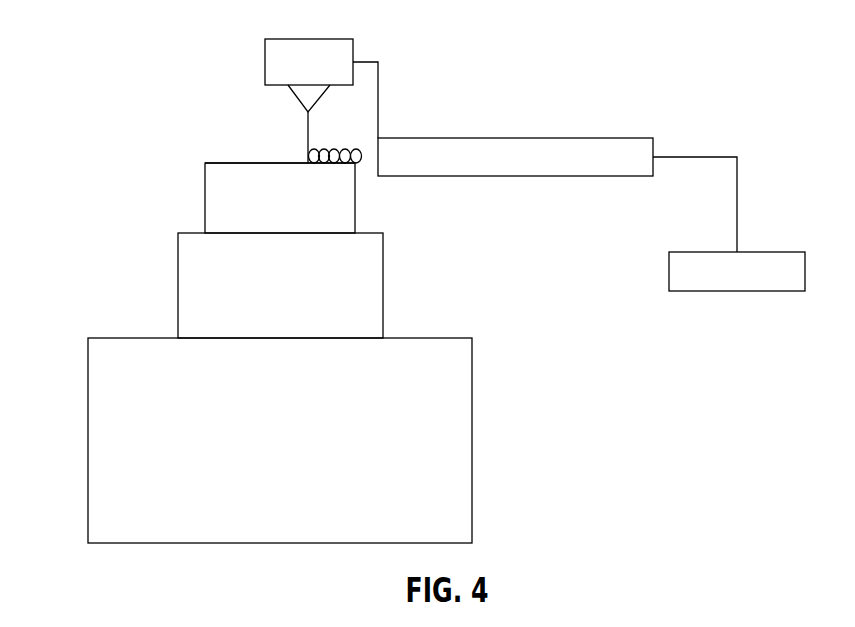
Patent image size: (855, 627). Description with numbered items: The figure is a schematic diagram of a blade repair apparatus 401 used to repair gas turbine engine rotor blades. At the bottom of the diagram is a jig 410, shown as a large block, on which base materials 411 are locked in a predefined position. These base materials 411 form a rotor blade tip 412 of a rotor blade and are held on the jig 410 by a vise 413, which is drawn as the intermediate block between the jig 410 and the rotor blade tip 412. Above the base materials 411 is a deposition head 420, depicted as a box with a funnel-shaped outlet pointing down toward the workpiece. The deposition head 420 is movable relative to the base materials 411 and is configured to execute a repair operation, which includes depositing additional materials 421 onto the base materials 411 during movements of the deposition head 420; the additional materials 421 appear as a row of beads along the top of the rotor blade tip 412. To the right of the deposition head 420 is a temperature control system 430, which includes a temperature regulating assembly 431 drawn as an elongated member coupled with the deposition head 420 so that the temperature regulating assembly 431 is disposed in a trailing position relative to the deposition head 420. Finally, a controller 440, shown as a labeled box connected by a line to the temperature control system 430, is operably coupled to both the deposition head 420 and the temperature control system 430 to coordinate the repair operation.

The blade repair apparatus 401 is at (442, 62).
The jig 410 is at (105, 405).
The base materials 411 is at (277, 162).
The rotor blade tip 412 is at (223, 187).
The vise 413 is at (193, 272).
The deposition head 420 is at (308, 39).
The additional materials 421 is at (356, 164).
The temperature control system 430 is at (642, 138).
The temperature regulating assembly 431 is at (515, 148).
The controller 440 is at (730, 291).